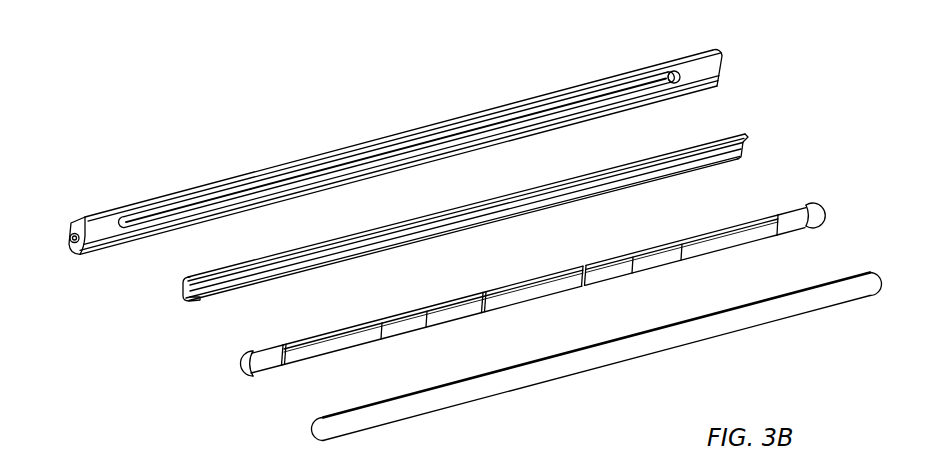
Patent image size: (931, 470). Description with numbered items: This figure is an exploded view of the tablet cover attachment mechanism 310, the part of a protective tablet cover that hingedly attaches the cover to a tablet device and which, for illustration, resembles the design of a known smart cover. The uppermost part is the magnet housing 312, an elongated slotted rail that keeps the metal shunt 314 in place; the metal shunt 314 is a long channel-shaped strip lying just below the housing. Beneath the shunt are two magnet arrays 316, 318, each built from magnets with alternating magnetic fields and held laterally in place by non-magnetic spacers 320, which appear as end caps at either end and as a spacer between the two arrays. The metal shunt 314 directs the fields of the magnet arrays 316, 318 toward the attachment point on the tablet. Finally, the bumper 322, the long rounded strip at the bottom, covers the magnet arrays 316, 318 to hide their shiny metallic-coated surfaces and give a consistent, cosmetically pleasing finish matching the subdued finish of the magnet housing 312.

The tablet cover attachment mechanism 310 is at (140, 112).
The magnet housing 312 is at (494, 101).
The metal shunt 314 is at (757, 138).
The magnet array 316 is at (491, 313).
The magnet array 318 is at (786, 231).
The spacers 320 is at (230, 353).
The bumper 322 is at (303, 437).